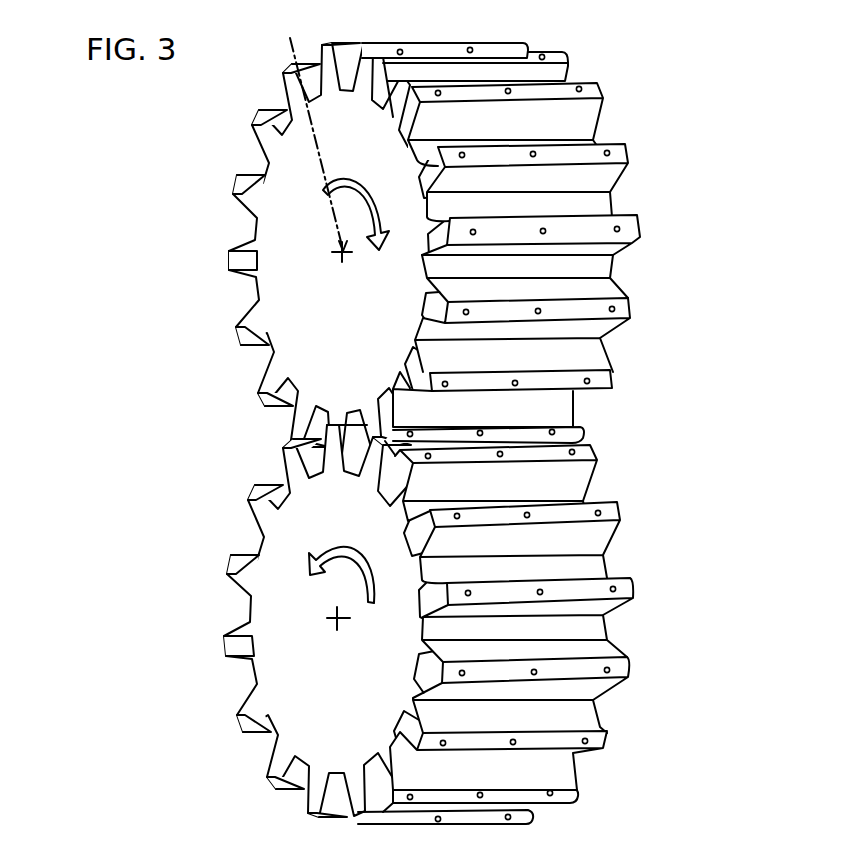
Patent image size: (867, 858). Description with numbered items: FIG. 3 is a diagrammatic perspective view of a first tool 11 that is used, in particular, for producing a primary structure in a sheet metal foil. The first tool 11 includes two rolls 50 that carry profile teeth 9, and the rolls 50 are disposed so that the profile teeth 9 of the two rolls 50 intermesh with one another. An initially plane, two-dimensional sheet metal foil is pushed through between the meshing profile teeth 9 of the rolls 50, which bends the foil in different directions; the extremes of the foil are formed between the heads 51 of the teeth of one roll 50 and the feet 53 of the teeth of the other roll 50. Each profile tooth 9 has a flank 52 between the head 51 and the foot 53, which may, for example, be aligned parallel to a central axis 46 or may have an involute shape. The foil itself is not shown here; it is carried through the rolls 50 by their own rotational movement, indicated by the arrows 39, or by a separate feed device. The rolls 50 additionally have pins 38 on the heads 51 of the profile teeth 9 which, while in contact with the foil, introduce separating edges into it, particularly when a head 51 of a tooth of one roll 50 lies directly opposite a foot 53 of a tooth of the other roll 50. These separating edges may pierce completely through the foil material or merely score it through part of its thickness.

The profile teeth 9 is at (621, 153).
The first tool 11 is at (671, 381).
The pins 38 is at (620, 672).
The direction of rotation 39 is at (330, 190).
The central axis 46 is at (286, 48).
The rolls 50 is at (262, 234).
The head 51 is at (620, 312).
The flank 52 is at (603, 291).
The foot 53 is at (603, 268).